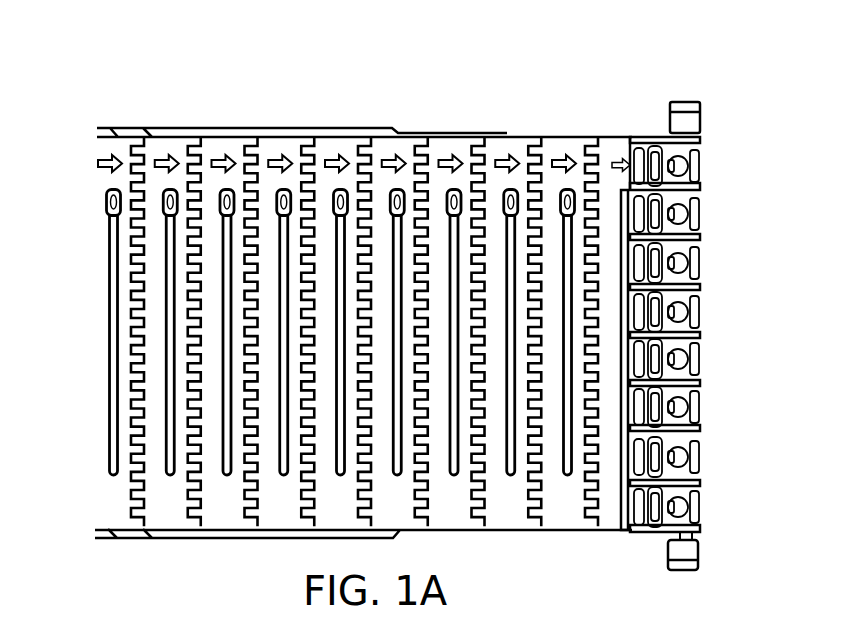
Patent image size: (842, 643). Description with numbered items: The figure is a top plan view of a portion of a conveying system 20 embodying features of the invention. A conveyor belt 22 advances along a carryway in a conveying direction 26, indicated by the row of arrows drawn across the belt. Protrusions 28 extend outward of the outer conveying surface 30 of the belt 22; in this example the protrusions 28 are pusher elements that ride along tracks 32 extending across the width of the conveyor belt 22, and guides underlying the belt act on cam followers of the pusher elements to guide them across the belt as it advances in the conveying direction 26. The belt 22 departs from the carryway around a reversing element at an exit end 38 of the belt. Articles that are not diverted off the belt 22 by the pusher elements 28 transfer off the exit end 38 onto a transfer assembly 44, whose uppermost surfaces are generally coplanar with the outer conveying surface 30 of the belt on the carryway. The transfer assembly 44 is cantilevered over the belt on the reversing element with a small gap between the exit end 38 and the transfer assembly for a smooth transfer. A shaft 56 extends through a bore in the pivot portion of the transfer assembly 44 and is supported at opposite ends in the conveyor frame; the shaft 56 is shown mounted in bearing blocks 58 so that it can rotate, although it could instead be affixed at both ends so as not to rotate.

The conveying system 20 is at (243, 88).
The conveyor belt 22 is at (163, 532).
The conveying direction 26 is at (447, 160).
The protrusions 28 is at (314, 282).
The outer conveying surface 30 is at (548, 520).
The tracks 32 is at (109, 326).
The exit end 38 is at (622, 535).
The transfer assembly 44 is at (658, 136).
The shaft 56 is at (692, 538).
The bearing blocks 58 is at (697, 118).